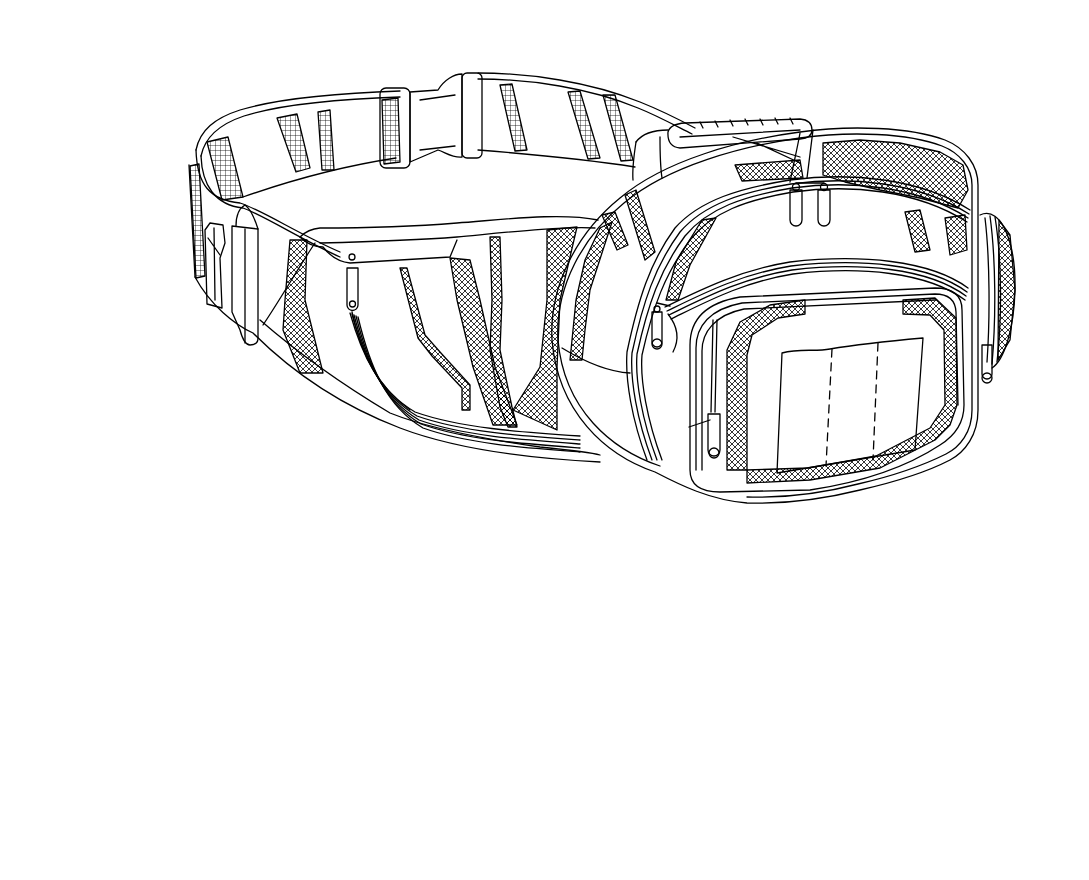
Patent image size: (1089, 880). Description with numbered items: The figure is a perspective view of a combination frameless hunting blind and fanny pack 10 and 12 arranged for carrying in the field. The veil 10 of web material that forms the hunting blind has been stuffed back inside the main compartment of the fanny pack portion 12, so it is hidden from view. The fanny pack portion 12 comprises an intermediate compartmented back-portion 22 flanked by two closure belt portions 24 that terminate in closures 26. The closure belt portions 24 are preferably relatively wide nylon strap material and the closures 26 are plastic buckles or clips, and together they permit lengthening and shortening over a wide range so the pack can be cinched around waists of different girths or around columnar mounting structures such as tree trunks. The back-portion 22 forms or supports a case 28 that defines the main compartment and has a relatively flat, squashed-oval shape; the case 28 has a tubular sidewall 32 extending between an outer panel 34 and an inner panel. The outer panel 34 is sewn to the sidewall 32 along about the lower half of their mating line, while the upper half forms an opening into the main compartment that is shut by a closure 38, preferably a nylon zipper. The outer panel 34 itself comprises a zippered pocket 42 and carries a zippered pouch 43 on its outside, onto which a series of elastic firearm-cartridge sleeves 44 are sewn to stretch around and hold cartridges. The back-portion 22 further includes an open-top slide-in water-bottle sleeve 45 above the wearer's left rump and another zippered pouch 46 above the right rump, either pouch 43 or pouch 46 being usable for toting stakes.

The veil 10 is at (287, 94).
The fanny pack portion 12 is at (351, 92).
The intermediate compartmented back-portion 22 is at (380, 228).
The closure belt portions 24 is at (195, 141).
The closures 26 is at (456, 68).
The case 28 is at (688, 200).
The tubular sidewall 32 is at (765, 310).
The outer panel 34 is at (857, 225).
The closure 38 is at (800, 183).
The zippered pocket 42 is at (809, 358).
The zippered pouch 43 is at (854, 338).
The firearm-cartridge sleeves 44 is at (867, 421).
The water-bottle sleeve 45 is at (414, 366).
The zippered pouch 46 is at (1017, 287).